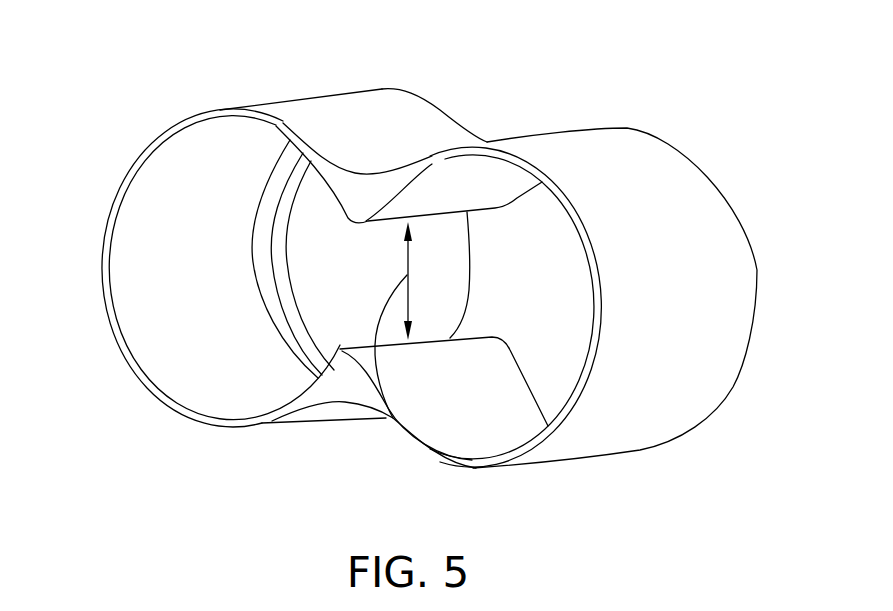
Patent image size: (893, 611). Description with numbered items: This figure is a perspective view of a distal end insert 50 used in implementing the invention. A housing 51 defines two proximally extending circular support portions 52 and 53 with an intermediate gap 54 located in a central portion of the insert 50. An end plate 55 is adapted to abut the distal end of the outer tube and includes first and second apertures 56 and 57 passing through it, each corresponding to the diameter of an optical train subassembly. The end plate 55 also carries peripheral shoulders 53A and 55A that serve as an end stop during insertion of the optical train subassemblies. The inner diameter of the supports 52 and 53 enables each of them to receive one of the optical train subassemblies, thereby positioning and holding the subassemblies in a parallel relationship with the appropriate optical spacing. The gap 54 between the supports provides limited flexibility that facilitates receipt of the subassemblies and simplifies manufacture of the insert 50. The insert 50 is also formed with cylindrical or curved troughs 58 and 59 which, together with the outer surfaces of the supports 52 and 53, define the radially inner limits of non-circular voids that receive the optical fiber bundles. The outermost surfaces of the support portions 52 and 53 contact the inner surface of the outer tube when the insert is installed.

The distal end insert 50 is at (714, 109).
The housing 51 is at (101, 258).
The circular support portion 52 is at (171, 207).
The circular support portion 53 is at (703, 370).
The peripheral shoulder 53A is at (537, 398).
The intermediate gap 54 is at (393, 418).
The end plate 55 is at (497, 230).
The peripheral shoulder 55A is at (273, 317).
The first aperture 56 is at (341, 273).
The second aperture 57 is at (548, 305).
The curved trough 58 is at (340, 405).
The curved trough 59 is at (441, 140).